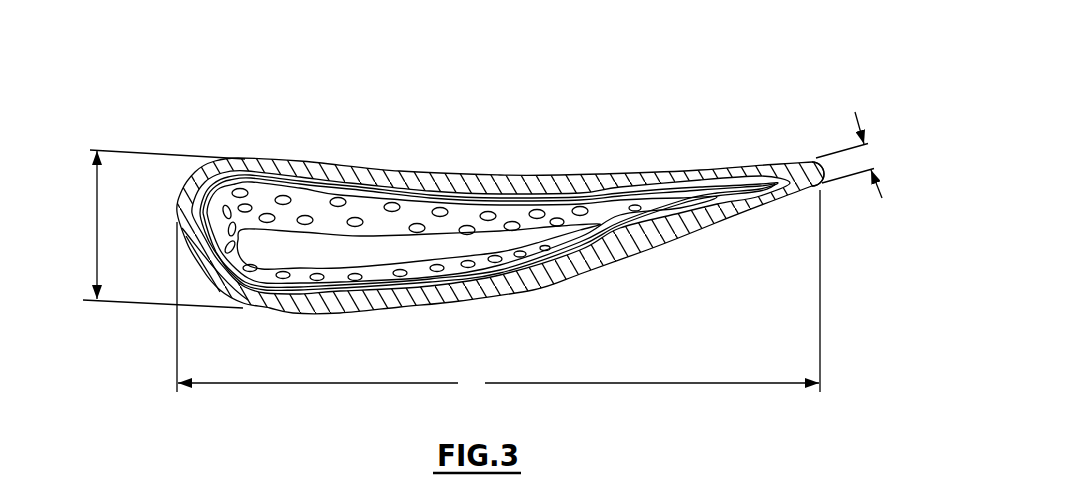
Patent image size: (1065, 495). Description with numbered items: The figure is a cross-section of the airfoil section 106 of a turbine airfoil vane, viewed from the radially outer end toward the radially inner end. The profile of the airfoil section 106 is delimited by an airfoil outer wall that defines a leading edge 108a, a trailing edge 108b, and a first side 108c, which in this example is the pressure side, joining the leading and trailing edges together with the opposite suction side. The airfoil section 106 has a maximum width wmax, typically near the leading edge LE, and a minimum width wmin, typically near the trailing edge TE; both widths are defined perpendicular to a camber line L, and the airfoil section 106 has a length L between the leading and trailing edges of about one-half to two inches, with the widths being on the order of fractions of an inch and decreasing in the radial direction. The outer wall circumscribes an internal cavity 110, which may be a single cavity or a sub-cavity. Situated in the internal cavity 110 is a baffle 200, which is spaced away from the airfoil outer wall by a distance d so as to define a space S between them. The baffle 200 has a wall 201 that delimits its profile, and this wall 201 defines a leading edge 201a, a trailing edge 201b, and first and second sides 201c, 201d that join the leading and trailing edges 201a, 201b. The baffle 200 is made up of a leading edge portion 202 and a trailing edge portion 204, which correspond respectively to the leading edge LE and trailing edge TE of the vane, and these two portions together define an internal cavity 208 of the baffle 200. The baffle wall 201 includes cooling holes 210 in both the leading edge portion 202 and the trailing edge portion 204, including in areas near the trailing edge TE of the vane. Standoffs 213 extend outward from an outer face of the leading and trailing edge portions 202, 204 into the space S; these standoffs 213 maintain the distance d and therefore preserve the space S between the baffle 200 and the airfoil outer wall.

The airfoil section 106 is at (366, 118).
The internal cavity 110 is at (287, 243).
The baffle 200 is at (360, 314).
The wall 201 is at (615, 245).
The leading edge 201a is at (195, 212).
The trailing edge 201b is at (743, 192).
The first side 201c is at (466, 215).
The second side 201d is at (483, 300).
The leading edge portion 202 is at (238, 158).
The trailing edge portion 204 is at (635, 203).
The internal cavity 208 is at (372, 250).
The cooling holes 210 is at (337, 200).
The standoffs 213 is at (537, 186).
The leading edge 108a is at (180, 232).
The trailing edge 108b is at (815, 153).
The first side 108c is at (442, 178).
The leading edge LE is at (193, 160).
The trailing edge TE is at (793, 198).
The space S is at (504, 197).
The distance d is at (272, 295).
The length L is at (498, 294).
The maximum width wmax is at (135, 229).
The minimum width wmin is at (874, 155).